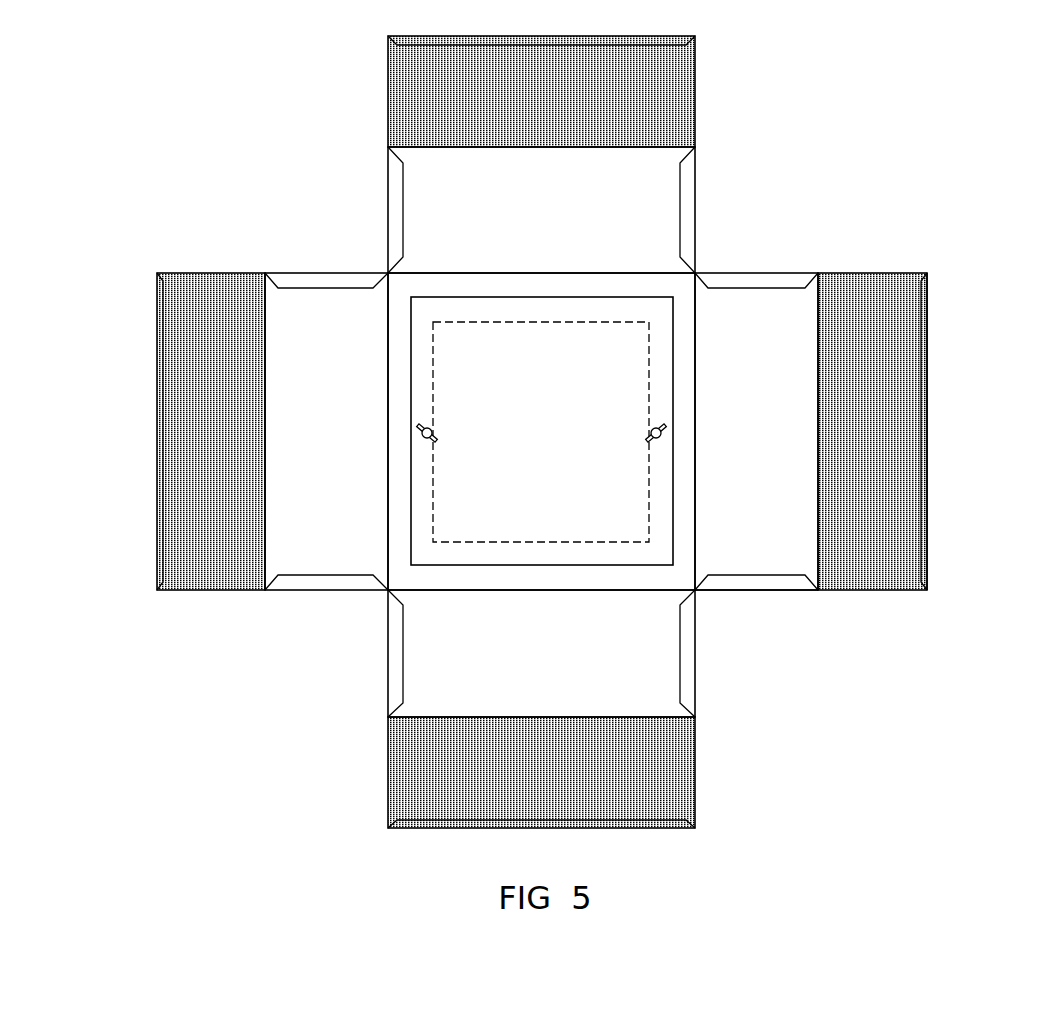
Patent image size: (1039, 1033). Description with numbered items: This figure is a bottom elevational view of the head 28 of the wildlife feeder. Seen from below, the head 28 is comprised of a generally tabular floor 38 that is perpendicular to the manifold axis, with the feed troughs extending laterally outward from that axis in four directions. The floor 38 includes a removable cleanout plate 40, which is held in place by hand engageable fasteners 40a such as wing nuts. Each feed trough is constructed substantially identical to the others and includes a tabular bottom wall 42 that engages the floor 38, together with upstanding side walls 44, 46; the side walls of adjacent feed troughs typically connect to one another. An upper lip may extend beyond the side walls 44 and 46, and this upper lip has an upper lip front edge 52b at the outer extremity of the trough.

The head 28 is at (583, 432).
The floor 38 is at (681, 286).
The removable cleanout plate 40 is at (542, 431).
The hand engageable fasteners 40a is at (651, 434).
The tabular bottom wall 42 is at (567, 226).
The upstanding side wall 44 is at (898, 273).
The upstanding side wall 46 is at (775, 588).
The upper lip front edge 52b is at (928, 450).